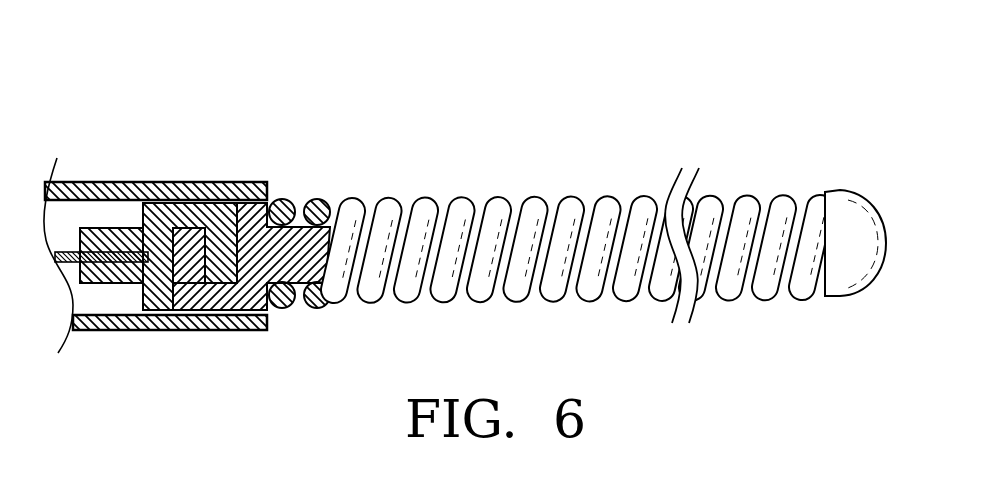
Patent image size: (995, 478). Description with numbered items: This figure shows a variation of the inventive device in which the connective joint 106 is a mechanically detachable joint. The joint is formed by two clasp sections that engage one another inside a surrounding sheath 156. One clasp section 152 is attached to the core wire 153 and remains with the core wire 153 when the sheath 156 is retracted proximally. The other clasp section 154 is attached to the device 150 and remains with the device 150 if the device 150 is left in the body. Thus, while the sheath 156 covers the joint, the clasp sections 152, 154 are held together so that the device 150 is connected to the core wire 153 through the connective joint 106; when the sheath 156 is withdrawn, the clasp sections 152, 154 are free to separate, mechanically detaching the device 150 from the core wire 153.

The connective joint 106 is at (269, 172).
The device 150 is at (600, 124).
The clasp section 152 is at (162, 293).
The core wire 153 is at (64, 248).
The clasp section 154 is at (243, 292).
The sheath 156 is at (194, 331).